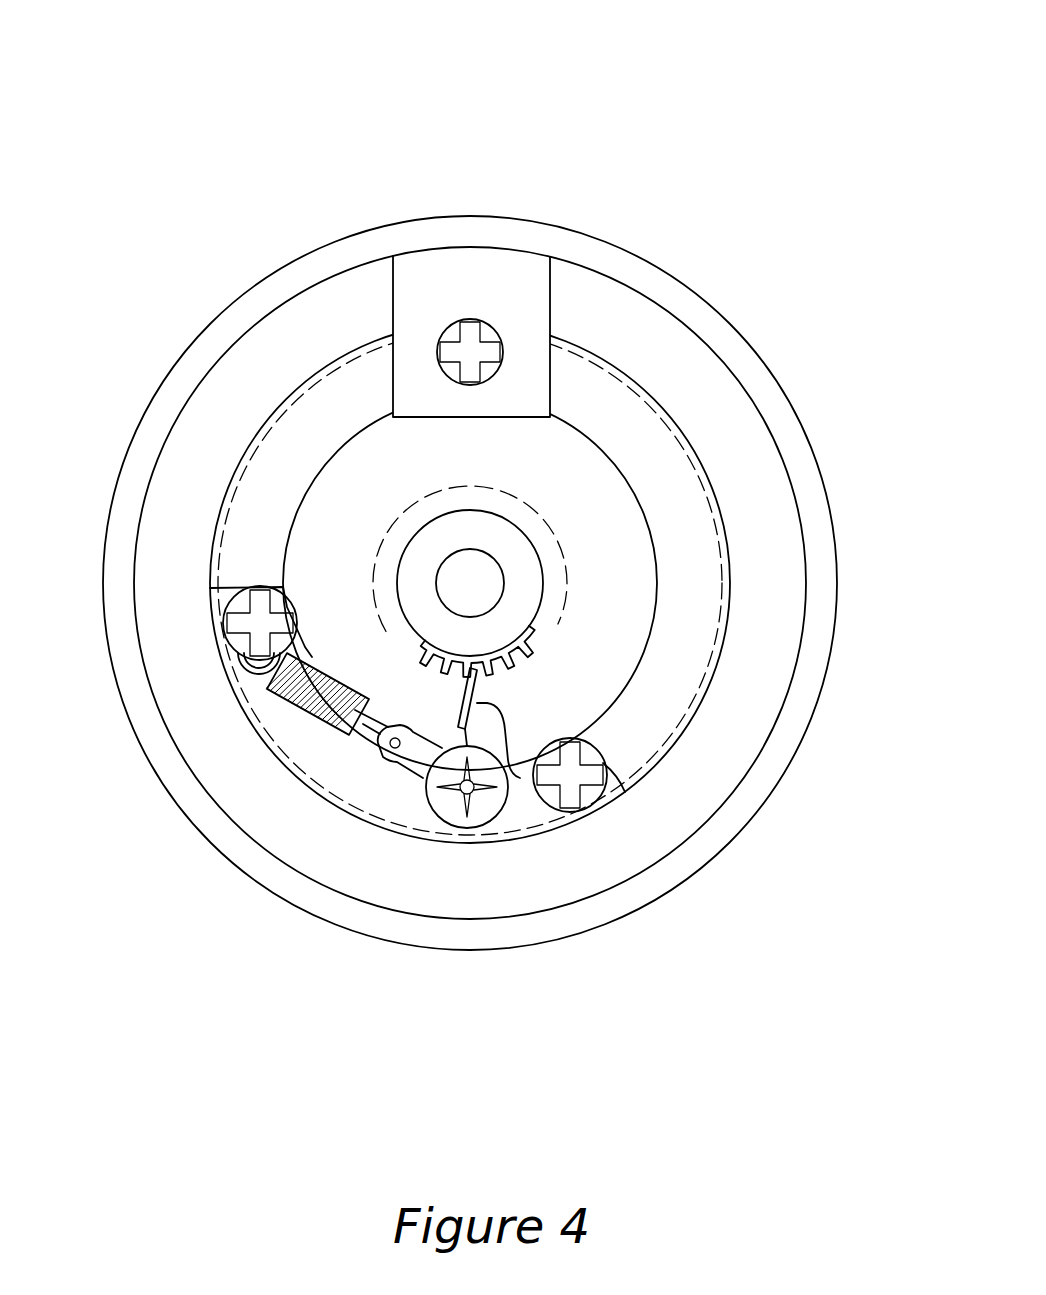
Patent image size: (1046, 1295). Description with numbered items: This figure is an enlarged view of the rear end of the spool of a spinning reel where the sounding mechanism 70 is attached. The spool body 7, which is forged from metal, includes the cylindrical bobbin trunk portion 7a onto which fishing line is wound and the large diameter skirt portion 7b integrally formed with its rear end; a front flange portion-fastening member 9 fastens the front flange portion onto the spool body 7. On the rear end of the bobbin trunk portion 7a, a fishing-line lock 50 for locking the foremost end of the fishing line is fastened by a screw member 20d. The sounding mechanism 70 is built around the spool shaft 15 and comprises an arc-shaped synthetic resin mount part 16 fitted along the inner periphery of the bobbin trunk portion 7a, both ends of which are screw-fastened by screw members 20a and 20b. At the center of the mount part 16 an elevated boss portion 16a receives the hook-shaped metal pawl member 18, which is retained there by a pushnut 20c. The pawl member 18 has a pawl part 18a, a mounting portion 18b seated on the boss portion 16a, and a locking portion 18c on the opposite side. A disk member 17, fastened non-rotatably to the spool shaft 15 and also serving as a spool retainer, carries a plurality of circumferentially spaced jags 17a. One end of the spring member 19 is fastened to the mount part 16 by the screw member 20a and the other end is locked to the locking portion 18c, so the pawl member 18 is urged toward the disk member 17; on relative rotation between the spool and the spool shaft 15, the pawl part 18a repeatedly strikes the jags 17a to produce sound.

The front flange portion-fastening member 9 is at (668, 131).
The spool body 7 is at (705, 196).
The bobbin trunk portion 7a is at (347, 360).
The skirt portion 7b is at (455, 232).
The fishing-line lock 50 is at (530, 275).
The screw member 20d is at (507, 350).
The spool shaft 15 is at (465, 578).
The disk member 17 is at (530, 543).
The jags 17a is at (540, 650).
The pawl member 18 is at (485, 722).
The pawl part 18a is at (472, 690).
The mounting portion 18b is at (507, 770).
The locking portion 18c is at (410, 757).
The mount part 16 is at (348, 788).
The boss portion 16a is at (470, 790).
The spring member 19 is at (297, 692).
The screw member 20a is at (227, 623).
The screw member 20b is at (570, 800).
The pushnut 20c is at (450, 813).
The sounding mechanism 70 is at (607, 747).